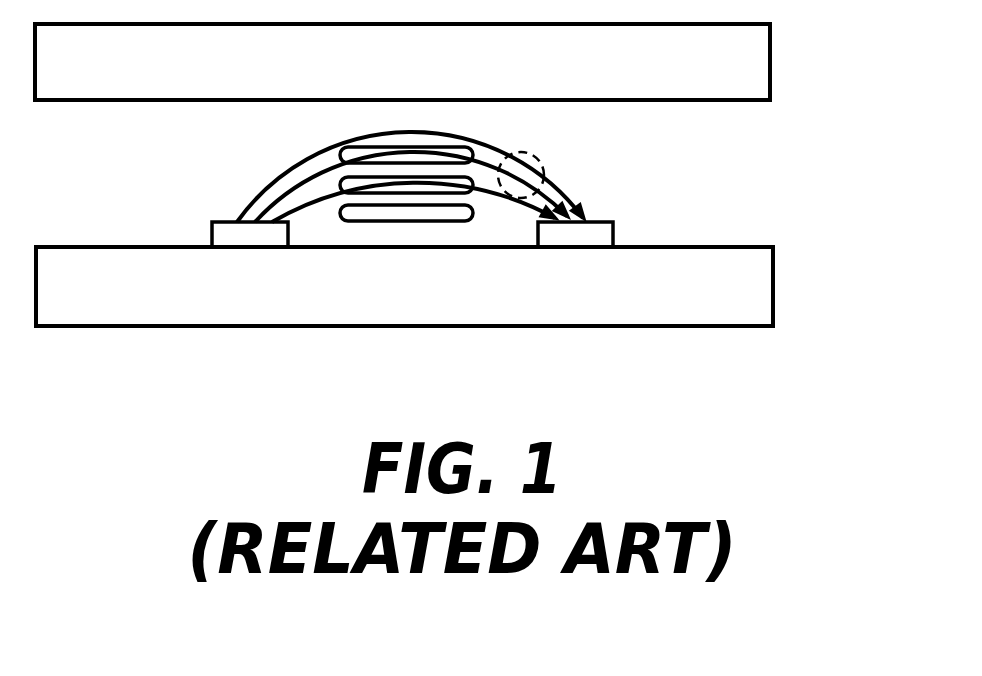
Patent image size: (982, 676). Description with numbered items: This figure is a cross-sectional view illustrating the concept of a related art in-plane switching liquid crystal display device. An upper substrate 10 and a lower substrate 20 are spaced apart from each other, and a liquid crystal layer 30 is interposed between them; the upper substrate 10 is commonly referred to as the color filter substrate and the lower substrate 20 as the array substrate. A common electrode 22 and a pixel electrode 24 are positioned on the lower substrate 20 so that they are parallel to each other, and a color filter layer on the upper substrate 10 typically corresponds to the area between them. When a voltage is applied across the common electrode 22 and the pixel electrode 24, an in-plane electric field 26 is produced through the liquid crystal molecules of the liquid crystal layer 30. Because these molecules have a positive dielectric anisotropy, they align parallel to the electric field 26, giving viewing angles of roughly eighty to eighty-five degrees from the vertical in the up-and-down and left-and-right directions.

The upper substrate 10 is at (807, 16).
The lower substrate 20 is at (807, 241).
The liquid crystal layer 30 is at (551, 261).
The common electrode 22 is at (245, 234).
The pixel electrode 24 is at (587, 233).
The in-plane electric field 26 is at (506, 204).